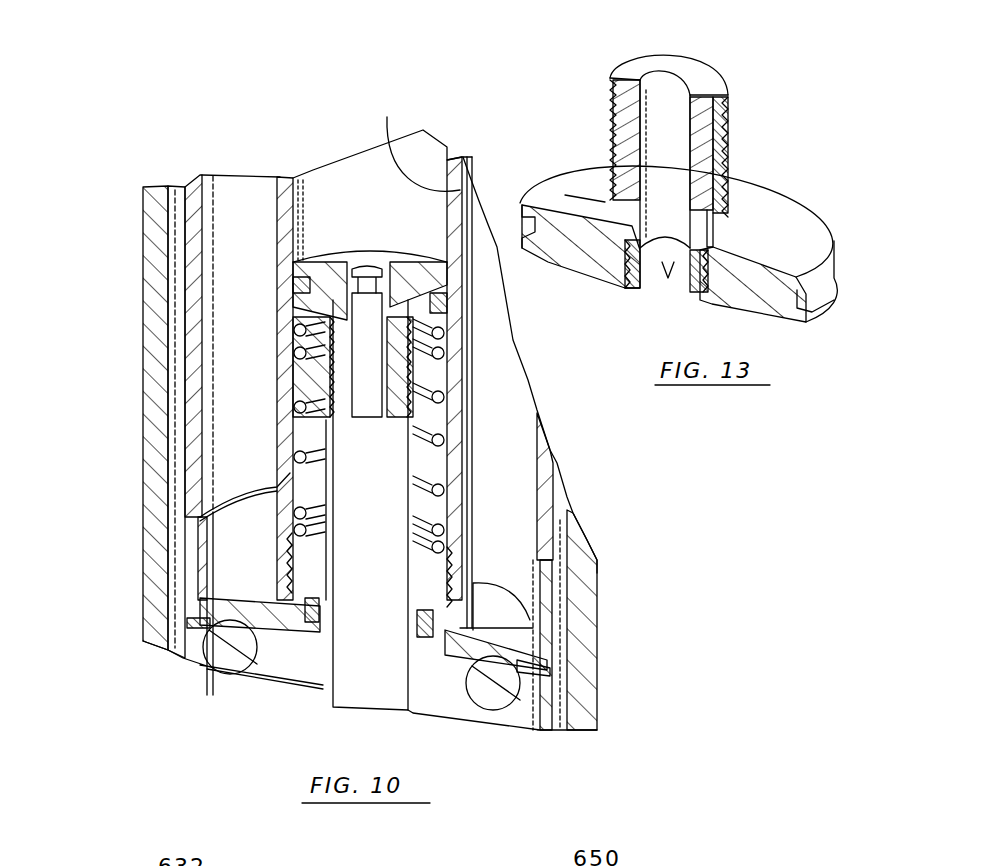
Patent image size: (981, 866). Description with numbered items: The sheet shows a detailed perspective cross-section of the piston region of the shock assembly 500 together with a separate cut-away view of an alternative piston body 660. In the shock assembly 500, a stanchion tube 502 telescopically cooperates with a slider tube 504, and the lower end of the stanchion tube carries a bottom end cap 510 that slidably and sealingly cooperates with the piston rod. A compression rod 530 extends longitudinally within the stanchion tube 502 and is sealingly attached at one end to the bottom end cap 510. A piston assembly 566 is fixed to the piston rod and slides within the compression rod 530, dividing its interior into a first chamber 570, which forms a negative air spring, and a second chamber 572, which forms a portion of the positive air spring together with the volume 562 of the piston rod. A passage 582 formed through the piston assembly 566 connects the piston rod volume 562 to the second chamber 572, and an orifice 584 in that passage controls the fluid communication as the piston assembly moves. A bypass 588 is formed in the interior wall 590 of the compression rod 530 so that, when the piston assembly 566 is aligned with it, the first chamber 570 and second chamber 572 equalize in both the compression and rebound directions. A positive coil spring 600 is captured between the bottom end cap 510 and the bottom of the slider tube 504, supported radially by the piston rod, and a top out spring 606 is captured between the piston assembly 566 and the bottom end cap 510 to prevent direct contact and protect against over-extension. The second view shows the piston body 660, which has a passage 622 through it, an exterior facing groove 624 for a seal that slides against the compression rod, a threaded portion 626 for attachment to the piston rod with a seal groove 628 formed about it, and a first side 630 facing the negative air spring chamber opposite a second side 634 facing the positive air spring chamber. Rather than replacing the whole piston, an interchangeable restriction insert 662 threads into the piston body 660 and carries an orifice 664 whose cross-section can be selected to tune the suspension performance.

In FIG. 10, the shock assembly 500 is at (133, 163).
In FIG. 10, the stanchion tube 502 is at (185, 327).
In FIG. 10, the slider tube 504 is at (155, 226).
In FIG. 10, the bottom end cap 510 is at (210, 609).
In FIG. 10, the compression rod 530 is at (451, 158).
In FIG. 10, the volume of piston rod 562 is at (337, 721).
In FIG. 10, the piston assembly 566 is at (293, 306).
In FIG. 10, the first chamber 570 is at (300, 381).
In FIG. 10, the second chamber 572 is at (365, 158).
In FIG. 10, the passage 582 is at (373, 420).
In FIG. 10, the orifice 584 is at (376, 256).
In FIG. 10, the bypass 588 is at (418, 139).
In FIG. 10, the interior wall 590 is at (315, 182).
In FIG. 10, the positive coil spring 600 is at (228, 652).
In FIG. 10, the top out spring 606 is at (303, 409).
In FIG. 13, the passage 622 is at (637, 63).
In FIG. 13, the exterior facing groove 624 is at (817, 322).
In FIG. 13, the threaded portion 626 is at (827, 118).
In FIG. 13, the seal groove 628 is at (728, 216).
In FIG. 13, the first side 630 is at (570, 197).
In FIG. 13, the second side 634 is at (717, 310).
In FIG. 13, the piston body 660 is at (827, 64).
In FIG. 13, the restriction insert 662 is at (640, 283).
In FIG. 13, the orifice 664 is at (667, 292).